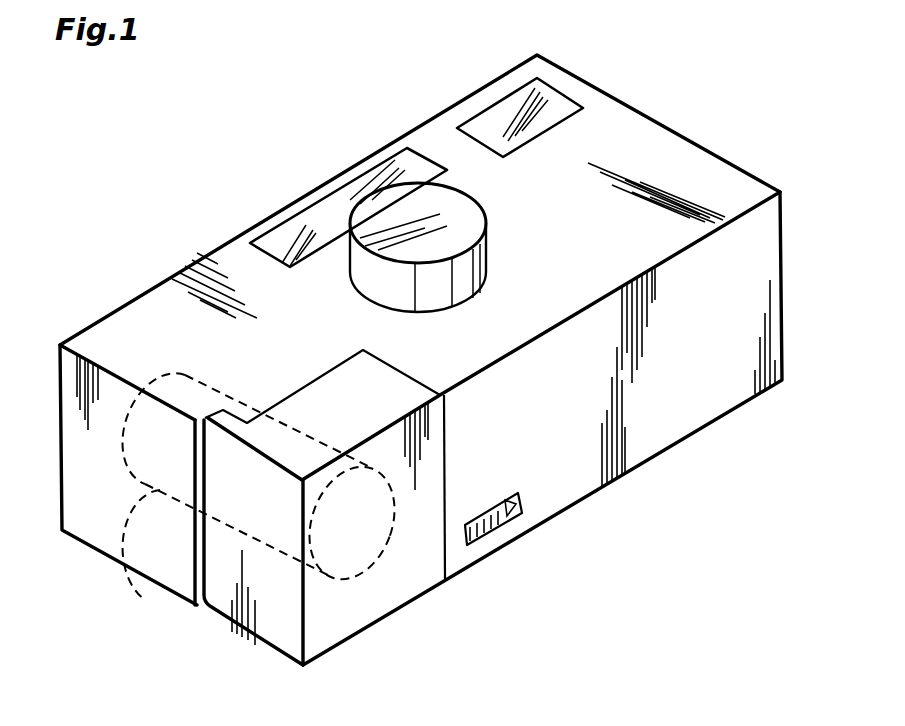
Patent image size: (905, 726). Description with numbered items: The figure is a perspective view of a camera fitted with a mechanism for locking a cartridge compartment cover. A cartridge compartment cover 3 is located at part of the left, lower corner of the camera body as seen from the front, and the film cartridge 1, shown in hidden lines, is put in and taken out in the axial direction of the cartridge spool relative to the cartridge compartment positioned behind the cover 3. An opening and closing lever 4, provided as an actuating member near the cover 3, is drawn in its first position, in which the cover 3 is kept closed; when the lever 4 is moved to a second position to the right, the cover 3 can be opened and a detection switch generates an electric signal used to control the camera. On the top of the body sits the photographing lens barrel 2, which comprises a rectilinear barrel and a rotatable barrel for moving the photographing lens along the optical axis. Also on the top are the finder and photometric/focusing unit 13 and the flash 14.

The film cartridge 1 is at (142, 599).
The photographing lens barrel 2 is at (373, 187).
The cartridge compartment cover 3 is at (383, 618).
The opening and closing lever 4 is at (500, 520).
The finder and photometric/focusing unit 13 is at (397, 167).
The flash 14 is at (537, 80).